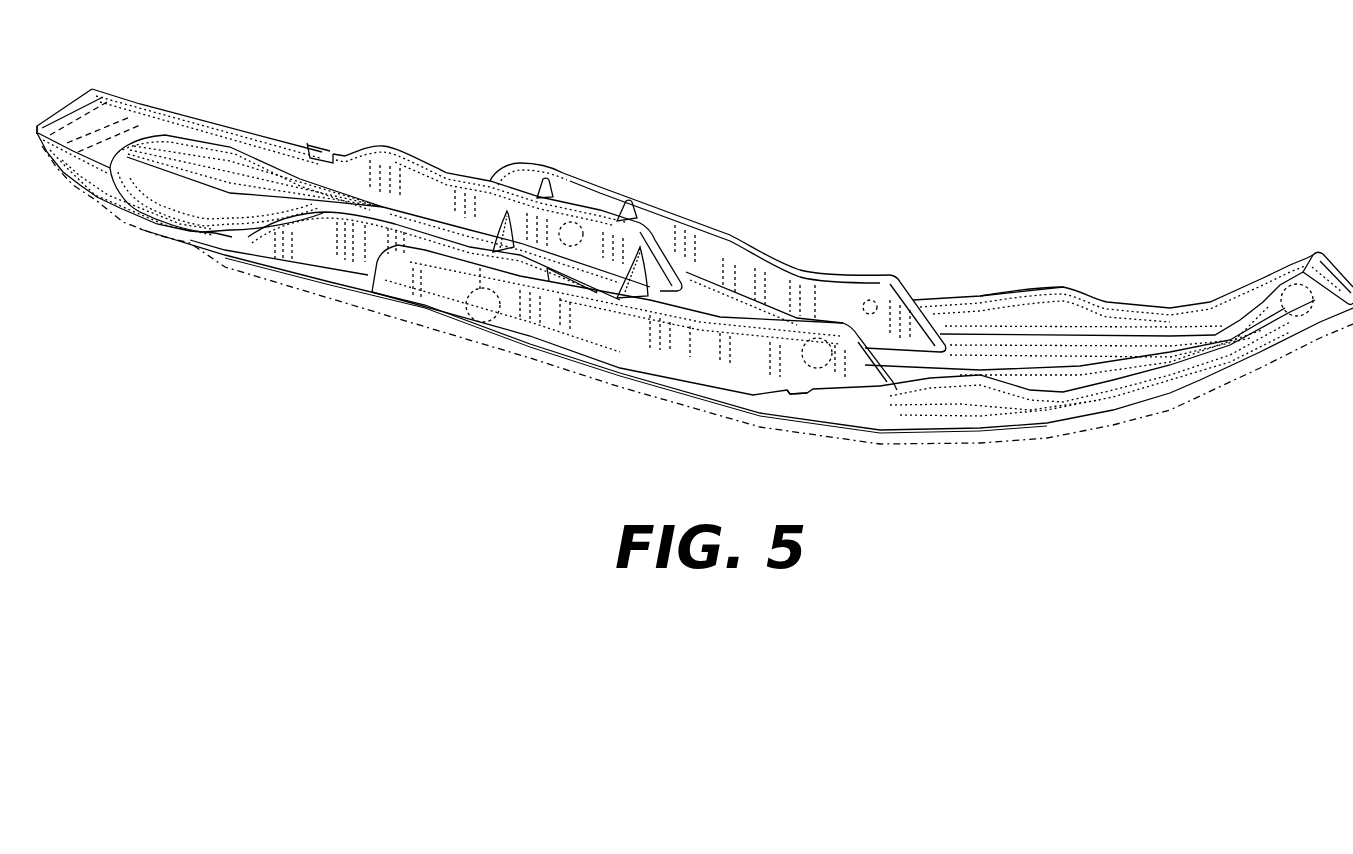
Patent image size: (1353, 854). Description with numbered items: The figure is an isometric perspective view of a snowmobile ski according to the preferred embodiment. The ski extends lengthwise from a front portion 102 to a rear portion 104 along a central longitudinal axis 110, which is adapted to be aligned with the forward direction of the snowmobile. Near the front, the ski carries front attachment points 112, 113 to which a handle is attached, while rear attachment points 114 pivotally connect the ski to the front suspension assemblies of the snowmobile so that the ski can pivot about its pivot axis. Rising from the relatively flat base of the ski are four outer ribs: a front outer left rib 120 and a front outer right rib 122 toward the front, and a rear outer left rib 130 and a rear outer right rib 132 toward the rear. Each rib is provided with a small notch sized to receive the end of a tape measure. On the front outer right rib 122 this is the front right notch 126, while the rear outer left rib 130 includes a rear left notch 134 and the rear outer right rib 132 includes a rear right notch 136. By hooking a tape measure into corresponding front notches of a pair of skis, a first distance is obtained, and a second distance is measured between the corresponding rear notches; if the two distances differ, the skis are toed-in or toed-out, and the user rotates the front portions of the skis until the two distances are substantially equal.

The front portion 102 is at (1125, 453).
The rear portion 104 is at (166, 270).
The central longitudinal axis 110 is at (1017, 258).
The front attachment point 112 is at (873, 300).
The front attachment point 113 is at (1309, 265).
The rear attachment points 114 is at (583, 226).
The front outer left rib 120 is at (1107, 295).
The front outer right rib 122 is at (998, 414).
The front right notch 126 is at (803, 396).
The rear outer left rib 130 is at (194, 120).
The rear outer right rib 132 is at (260, 250).
The rear left notch 134 is at (324, 143).
The rear right notch 136 is at (153, 237).